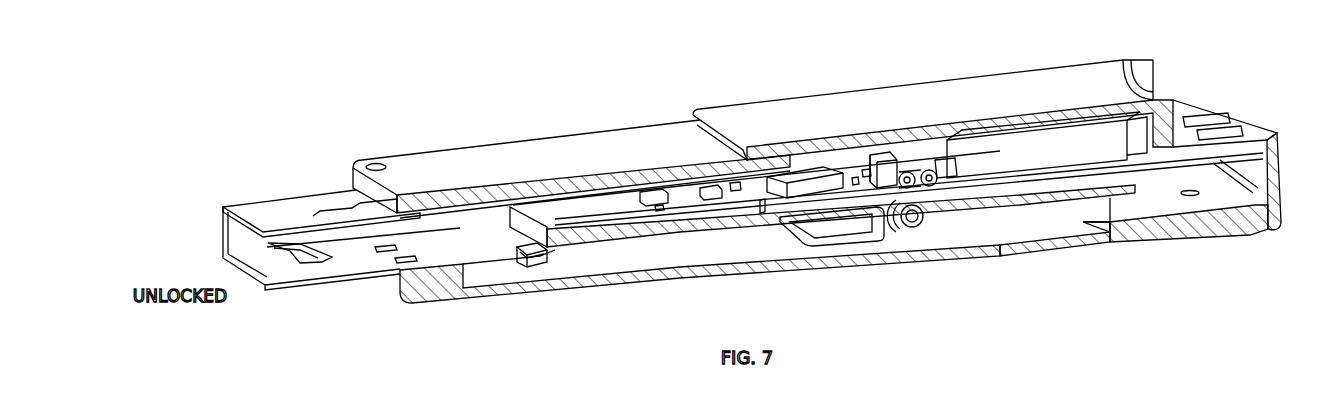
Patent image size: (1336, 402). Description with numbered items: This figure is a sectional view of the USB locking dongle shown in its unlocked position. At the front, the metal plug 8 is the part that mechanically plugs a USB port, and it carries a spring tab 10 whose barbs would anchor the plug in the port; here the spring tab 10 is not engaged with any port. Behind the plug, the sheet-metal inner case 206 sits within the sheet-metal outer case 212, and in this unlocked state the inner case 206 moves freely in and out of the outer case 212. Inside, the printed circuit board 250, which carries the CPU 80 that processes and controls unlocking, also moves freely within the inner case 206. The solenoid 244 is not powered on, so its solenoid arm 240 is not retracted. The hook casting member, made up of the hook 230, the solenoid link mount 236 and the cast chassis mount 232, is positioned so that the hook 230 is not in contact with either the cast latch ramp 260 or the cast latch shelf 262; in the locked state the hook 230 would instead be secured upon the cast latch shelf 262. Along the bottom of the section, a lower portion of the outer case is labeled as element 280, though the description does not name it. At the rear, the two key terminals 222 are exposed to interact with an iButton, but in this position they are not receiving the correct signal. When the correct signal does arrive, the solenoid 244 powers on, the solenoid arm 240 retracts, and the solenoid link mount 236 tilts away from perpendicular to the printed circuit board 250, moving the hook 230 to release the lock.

The plug 8 is at (278, 200).
The spring tab 10 is at (322, 258).
The CPU 80 is at (803, 180).
The inner case 206 is at (433, 292).
The outer case 212 is at (997, 93).
The key terminals 222 is at (1223, 130).
The hook 230 is at (843, 237).
The cast chassis mount 232 is at (917, 223).
The solenoid link mount 236 is at (885, 167).
The solenoid arm 240 is at (938, 167).
The solenoid 244 is at (1093, 147).
The printed circuit board 250 is at (542, 222).
The cast latch ramp 260 is at (557, 254).
The cast latch shelf 262 is at (547, 266).
The bottom cover 280 is at (1067, 233).